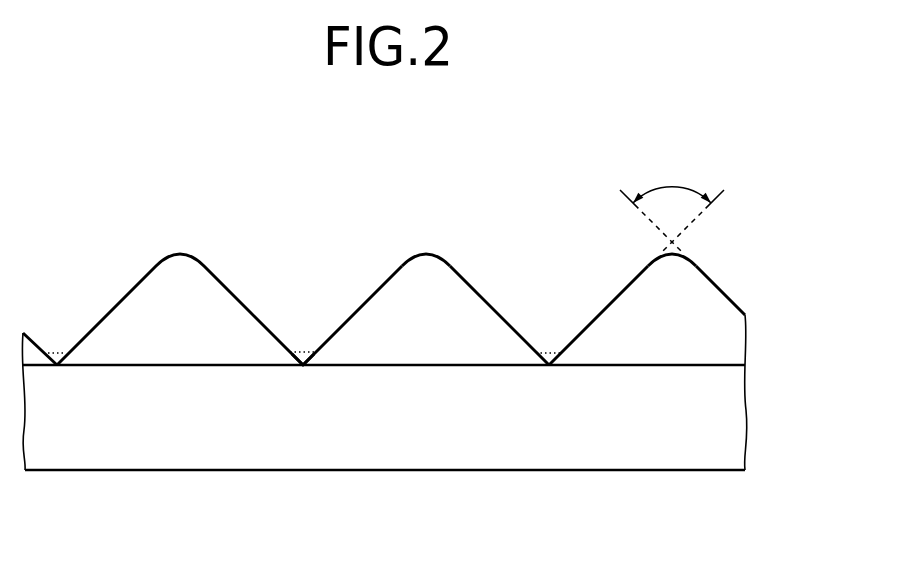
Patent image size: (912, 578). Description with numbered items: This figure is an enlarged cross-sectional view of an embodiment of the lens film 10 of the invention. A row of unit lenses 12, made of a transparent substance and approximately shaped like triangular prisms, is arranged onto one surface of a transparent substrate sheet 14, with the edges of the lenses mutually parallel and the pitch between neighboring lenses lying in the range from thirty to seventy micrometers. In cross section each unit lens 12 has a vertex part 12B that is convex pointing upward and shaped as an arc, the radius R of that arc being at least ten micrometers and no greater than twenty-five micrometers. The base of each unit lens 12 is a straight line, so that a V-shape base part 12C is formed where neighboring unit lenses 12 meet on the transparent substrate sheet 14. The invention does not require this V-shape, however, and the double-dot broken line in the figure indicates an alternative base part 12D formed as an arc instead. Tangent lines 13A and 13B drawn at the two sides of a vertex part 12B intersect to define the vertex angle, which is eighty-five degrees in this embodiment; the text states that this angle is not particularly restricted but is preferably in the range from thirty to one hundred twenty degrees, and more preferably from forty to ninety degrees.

The lens film 10 is at (98, 264).
The unit lens 12 is at (494, 301).
The vertex part 12B is at (193, 278).
The V-shape base part 12C is at (306, 352).
The base part 12D is at (301, 352).
The tangent line 13A is at (633, 212).
The tangent line 13B is at (717, 212).
The transparent substrate sheet 14 is at (628, 448).
The radius of the arc R is at (433, 263).